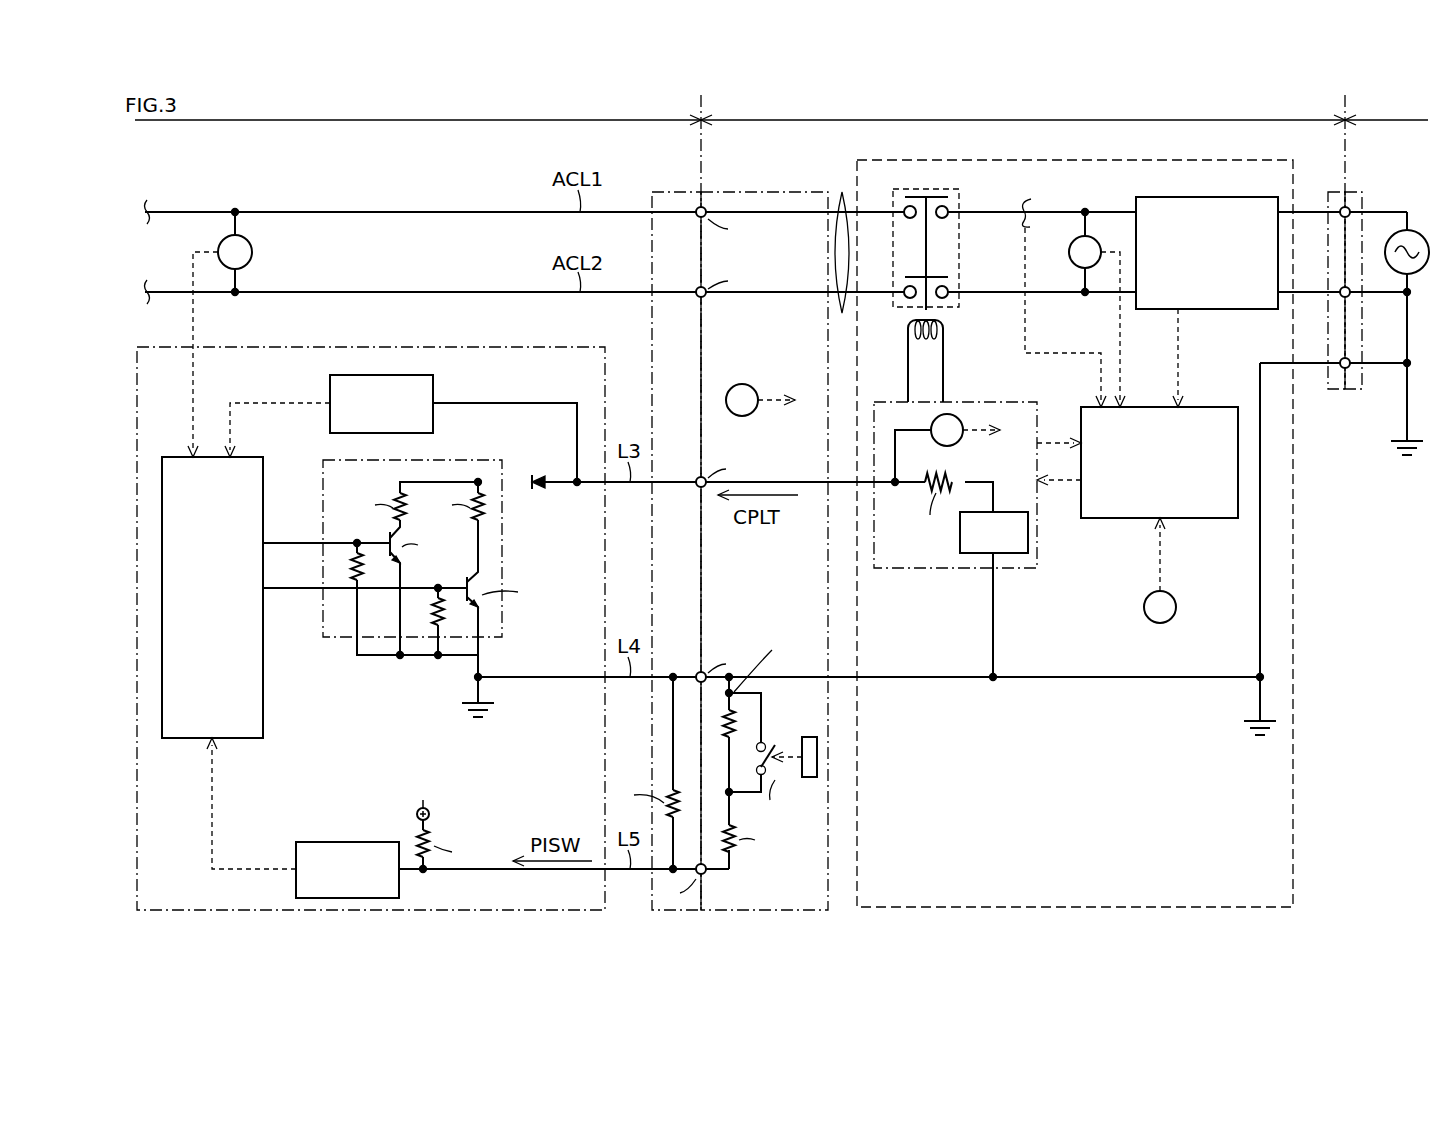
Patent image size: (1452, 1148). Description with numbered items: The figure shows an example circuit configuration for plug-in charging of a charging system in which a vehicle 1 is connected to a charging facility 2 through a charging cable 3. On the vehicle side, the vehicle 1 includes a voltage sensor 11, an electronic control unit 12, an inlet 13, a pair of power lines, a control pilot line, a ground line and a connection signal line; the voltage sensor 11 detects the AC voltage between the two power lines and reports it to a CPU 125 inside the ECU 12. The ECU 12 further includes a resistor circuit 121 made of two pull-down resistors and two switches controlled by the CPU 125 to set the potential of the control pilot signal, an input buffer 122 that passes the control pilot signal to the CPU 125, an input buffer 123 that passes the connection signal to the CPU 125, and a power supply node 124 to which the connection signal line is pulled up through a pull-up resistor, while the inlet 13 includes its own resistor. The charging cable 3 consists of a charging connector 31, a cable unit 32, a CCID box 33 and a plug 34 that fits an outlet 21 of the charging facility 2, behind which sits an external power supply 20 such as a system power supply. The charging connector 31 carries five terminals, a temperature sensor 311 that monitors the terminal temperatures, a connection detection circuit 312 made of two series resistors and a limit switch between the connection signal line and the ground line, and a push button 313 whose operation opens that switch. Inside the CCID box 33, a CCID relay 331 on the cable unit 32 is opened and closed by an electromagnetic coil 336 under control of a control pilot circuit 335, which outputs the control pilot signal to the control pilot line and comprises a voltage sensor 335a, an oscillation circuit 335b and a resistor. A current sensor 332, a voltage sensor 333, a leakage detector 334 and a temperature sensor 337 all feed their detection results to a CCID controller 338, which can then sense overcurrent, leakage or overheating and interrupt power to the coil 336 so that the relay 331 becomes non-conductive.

The vehicle 1 is at (418, 108).
The charging facility 2 is at (1386, 108).
The charging cable 3 is at (1023, 108).
The voltage sensor 11 is at (252, 242).
The electronic control unit (ECU) 12 is at (528, 347).
The inlet 13 is at (669, 192).
The external power supply 20 is at (1415, 230).
The outlet 21 is at (1352, 192).
The charging connector 31 is at (753, 192).
The cable unit 32 is at (842, 192).
The CCID box 33 is at (1118, 160).
The plug 34 is at (1336, 192).
The resistor circuit 121 is at (440, 460).
The input buffer 122 is at (375, 375).
The input buffer 123 is at (342, 842).
The power supply node 124 is at (424, 806).
The CPU 125 is at (243, 457).
The temperature sensor 311 is at (751, 391).
The connection detection circuit 312 is at (797, 874).
The push button 313 is at (809, 737).
The CCID relay 331 is at (943, 191).
The current sensor 332 is at (1030, 198).
The voltage sensor 333 is at (1073, 266).
The leakage detector 334 is at (1246, 309).
The control pilot circuit 335 is at (955, 526).
The voltage sensor 335a is at (958, 446).
The oscillation circuit 335b is at (960, 544).
The electromagnetic coil 336 is at (945, 336).
The temperature sensor 337 is at (1171, 598).
The CCID controller 338 is at (1099, 518).